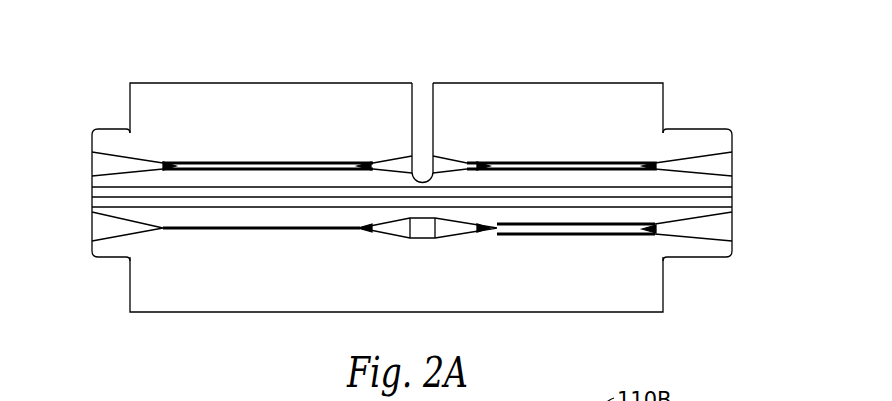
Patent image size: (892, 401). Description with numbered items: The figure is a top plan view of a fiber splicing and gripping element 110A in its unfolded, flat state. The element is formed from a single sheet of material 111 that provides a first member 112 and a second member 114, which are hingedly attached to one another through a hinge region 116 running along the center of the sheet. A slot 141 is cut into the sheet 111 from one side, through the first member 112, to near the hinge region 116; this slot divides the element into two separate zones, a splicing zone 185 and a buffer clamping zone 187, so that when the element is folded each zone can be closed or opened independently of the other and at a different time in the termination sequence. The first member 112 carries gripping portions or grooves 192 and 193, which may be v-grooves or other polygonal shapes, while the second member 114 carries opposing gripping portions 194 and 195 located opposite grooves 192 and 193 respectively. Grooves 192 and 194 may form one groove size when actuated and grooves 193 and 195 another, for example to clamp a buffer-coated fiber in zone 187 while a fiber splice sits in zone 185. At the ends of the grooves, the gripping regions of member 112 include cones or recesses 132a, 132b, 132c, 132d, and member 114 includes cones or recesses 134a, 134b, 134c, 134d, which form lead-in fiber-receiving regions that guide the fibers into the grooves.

The element 110A is at (415, 179).
The sheet of material 111 is at (643, 83).
The first member 112 is at (222, 83).
The second member 114 is at (252, 313).
The hinge region 116 is at (718, 197).
The slot 141 is at (423, 92).
The splicing zone 185 is at (263, 149).
The buffer clamping zone 187 is at (533, 149).
The groove 192 is at (190, 163).
The groove 193 is at (550, 162).
The gripping portion 194 is at (183, 230).
The gripping portion 195 is at (603, 228).
The cone or recess 132a is at (103, 168).
The cone or recess 132b is at (393, 164).
The cone or recess 132c is at (446, 164).
The cone or recess 132d is at (722, 165).
The cone or recess 134a is at (103, 227).
The cone or recess 134b is at (400, 228).
The cone or recess 134c is at (450, 228).
The cone or recess 134d is at (722, 225).